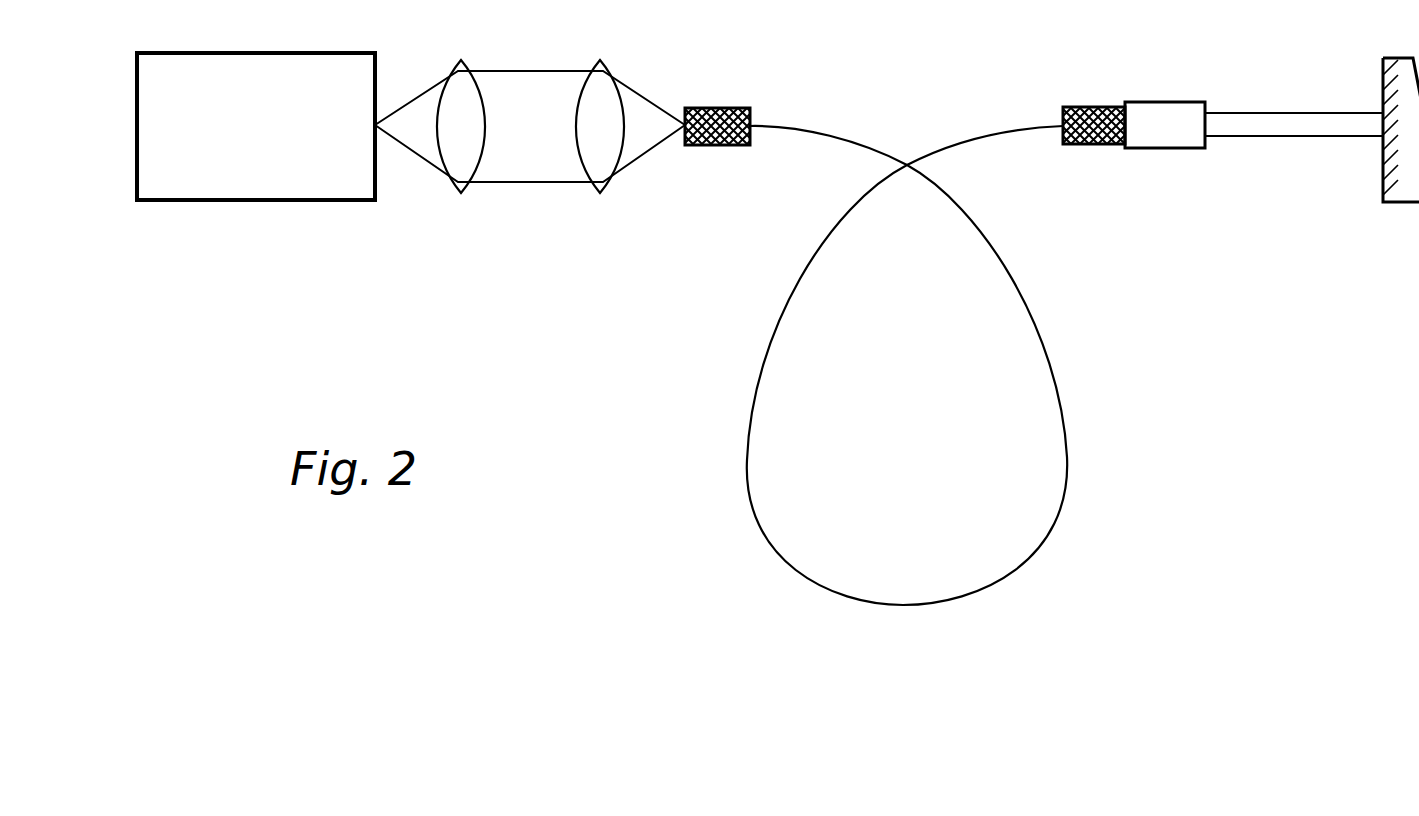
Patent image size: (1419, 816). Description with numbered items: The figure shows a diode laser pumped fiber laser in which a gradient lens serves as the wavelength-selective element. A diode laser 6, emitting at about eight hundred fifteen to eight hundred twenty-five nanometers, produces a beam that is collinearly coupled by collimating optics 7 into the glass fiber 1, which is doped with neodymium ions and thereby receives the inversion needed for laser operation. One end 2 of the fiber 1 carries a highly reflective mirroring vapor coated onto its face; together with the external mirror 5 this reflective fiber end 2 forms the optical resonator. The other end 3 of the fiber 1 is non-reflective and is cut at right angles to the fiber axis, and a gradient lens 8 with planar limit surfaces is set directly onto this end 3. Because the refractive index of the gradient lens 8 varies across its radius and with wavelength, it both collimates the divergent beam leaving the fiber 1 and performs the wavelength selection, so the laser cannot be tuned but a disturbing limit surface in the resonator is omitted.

The glass fiber 1 is at (830, 225).
The reflective fiber end 2 is at (685, 108).
The non-reflective fiber end 3 is at (1100, 108).
The external mirror 5 is at (1405, 204).
The diode laser 6 is at (210, 184).
The collimating optics 7 is at (598, 202).
The gradient lens 8 is at (1185, 148).